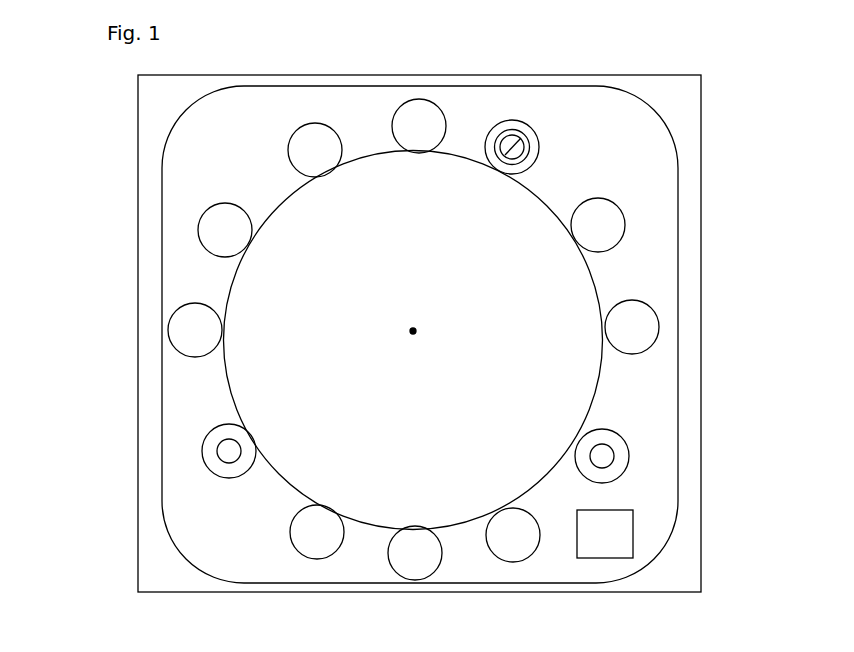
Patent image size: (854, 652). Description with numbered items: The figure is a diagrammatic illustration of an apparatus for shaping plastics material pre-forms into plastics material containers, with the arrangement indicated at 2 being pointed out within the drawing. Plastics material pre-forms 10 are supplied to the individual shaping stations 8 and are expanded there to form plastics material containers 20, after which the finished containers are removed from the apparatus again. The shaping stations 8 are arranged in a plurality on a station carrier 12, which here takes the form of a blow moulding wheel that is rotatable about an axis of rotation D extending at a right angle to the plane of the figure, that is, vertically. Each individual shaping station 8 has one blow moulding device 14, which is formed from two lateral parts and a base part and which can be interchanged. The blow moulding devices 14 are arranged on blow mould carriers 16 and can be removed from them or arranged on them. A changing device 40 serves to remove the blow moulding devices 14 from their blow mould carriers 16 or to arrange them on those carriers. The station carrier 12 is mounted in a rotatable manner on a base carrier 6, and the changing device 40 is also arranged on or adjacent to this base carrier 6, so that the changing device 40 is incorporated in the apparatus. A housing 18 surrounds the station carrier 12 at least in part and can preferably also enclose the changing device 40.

The arrangement 2 is at (190, 265).
The base carrier 6 is at (223, 510).
The shaping station 8 is at (607, 215).
The plastics material pre-form 10 is at (605, 457).
The station carrier 12 is at (578, 335).
The blow moulding device 14 is at (524, 153).
The blow mould carrier 16 is at (530, 133).
The housing 18 is at (137, 490).
The plastics material container 20 is at (230, 452).
The changing device 40 is at (605, 534).